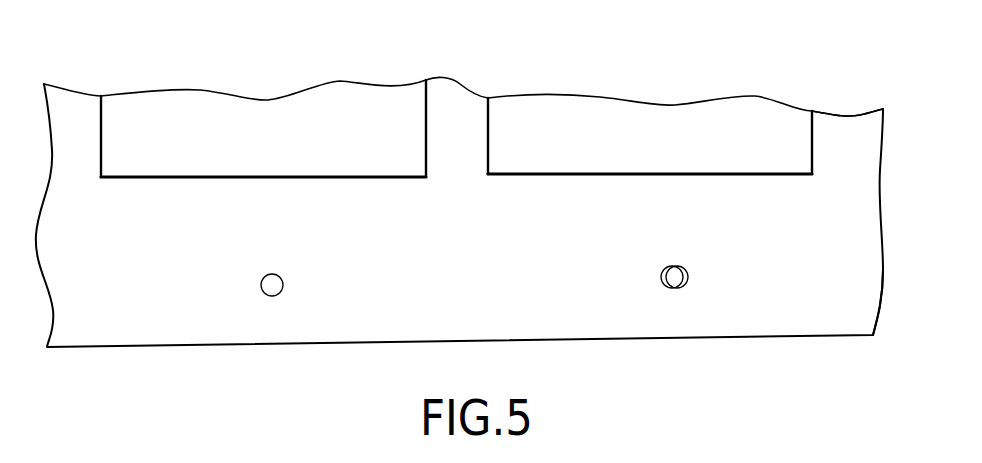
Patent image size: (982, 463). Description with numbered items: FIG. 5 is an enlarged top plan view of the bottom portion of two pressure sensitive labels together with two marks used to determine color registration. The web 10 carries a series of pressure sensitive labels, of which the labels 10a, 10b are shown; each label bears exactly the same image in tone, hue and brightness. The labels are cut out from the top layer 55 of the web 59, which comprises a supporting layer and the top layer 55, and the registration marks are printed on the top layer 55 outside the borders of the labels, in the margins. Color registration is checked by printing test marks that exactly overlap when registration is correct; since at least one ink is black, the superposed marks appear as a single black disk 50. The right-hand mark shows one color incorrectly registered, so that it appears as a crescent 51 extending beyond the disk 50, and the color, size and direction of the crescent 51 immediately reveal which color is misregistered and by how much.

The web 10 is at (722, 332).
The pressure sensitive label 10a is at (352, 90).
The pressure sensitive label 10b is at (623, 97).
The disk 50 is at (280, 277).
The crescent 51 is at (687, 272).
The top layer 55 is at (828, 132).
The web 59 is at (870, 302).